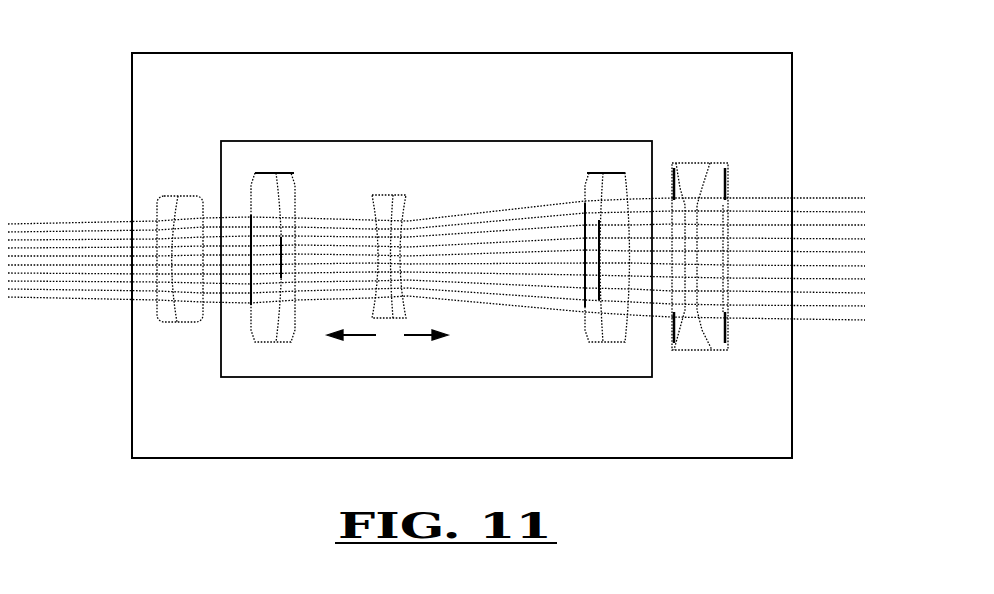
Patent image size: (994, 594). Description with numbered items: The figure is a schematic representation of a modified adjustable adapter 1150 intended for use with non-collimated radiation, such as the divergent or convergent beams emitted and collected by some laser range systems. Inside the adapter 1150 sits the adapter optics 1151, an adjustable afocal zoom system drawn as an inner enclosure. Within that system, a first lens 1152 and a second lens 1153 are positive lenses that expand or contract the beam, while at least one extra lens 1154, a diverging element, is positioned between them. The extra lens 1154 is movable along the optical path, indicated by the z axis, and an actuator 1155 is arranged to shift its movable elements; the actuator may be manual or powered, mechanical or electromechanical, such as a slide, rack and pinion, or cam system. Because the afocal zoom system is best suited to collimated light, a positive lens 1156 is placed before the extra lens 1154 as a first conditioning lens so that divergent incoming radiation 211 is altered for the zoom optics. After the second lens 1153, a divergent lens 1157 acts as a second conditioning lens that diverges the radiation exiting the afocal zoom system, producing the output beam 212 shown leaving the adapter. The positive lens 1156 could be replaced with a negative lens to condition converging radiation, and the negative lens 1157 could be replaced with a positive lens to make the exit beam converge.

The adjustable adapter 1150 is at (310, 53).
The adapter optics 1151 is at (295, 141).
The first lens 1152 is at (255, 318).
The second lens 1153 is at (615, 182).
The at least one extra lens 1154 is at (383, 205).
The actuator 1155 is at (387, 352).
The positive lens 1156 is at (185, 205).
The divergent lens 1157 is at (695, 175).
The radiation 211 is at (113, 270).
The outgoing light beam 212 is at (830, 215).